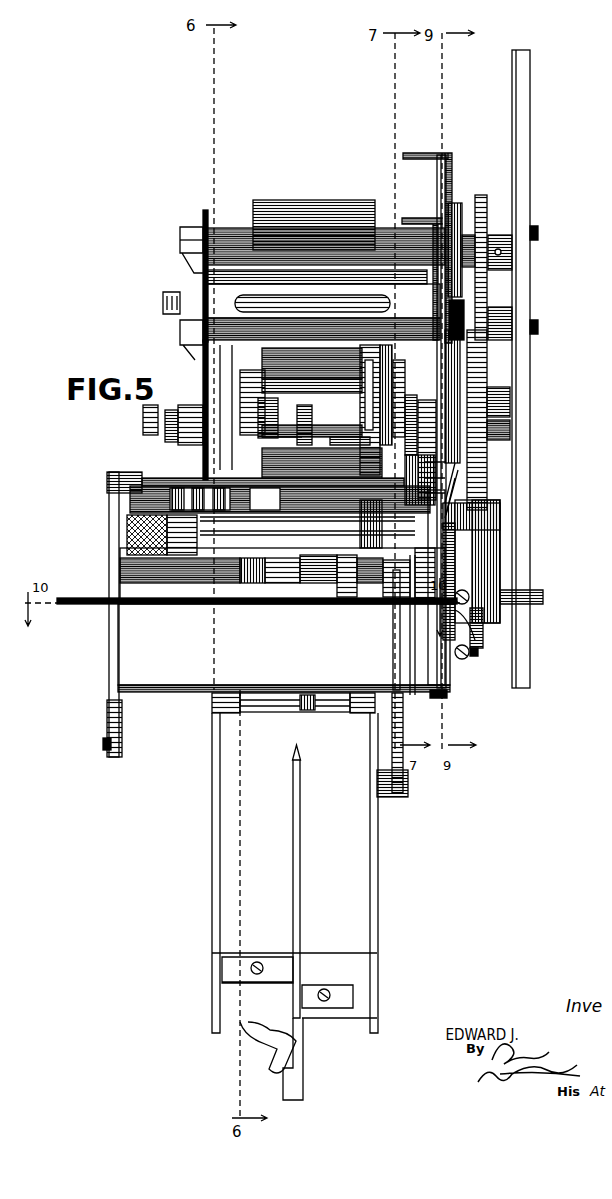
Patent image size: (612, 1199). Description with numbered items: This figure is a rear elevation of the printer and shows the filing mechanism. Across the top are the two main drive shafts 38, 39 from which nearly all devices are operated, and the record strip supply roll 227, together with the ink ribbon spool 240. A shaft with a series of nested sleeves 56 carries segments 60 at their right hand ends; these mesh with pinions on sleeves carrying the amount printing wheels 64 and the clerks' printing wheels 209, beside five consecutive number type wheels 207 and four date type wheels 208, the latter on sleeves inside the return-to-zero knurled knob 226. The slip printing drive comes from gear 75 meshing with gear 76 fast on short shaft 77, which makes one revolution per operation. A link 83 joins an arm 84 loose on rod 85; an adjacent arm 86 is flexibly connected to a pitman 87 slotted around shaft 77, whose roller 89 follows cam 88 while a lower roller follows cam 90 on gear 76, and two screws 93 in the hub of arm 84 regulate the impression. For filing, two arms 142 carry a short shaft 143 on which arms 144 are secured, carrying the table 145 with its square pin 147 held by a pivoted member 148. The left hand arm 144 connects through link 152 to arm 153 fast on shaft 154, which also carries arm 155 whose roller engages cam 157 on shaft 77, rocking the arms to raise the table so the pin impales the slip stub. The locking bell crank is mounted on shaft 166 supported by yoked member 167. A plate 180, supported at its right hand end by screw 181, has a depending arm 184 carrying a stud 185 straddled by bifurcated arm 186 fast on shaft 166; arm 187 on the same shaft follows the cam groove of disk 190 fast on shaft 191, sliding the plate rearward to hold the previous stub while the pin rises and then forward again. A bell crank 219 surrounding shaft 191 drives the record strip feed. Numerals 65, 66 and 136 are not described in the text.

The shaft 38 is at (532, 230).
The shaft 39 is at (532, 326).
The nested sleeves 56 is at (508, 589).
The segments 60 is at (503, 557).
The amount printing wheels 64 is at (330, 582).
The gear 65 is at (262, 410).
The shaft 66 is at (300, 442).
The gear 75 is at (482, 298).
The gear 76 is at (482, 378).
The short shaft 77 is at (411, 397).
The link 83 is at (448, 544).
The arm 84 is at (445, 632).
The rod 85 is at (486, 625).
The arm 86 is at (474, 645).
The pitman 87 is at (480, 358).
The cam 88 is at (482, 430).
The anti-friction roller 89 is at (452, 340).
The cam 90 is at (482, 386).
The screws 93 is at (478, 635).
The collar 136 is at (318, 425).
The downwardly extending arms 142 is at (240, 715).
The short shaft 143 is at (215, 702).
The arms 144 is at (214, 845).
The table 145 is at (362, 973).
The square pin 147 is at (300, 854).
The member 148 is at (262, 1042).
The link 152 is at (402, 757).
The arm 153 is at (398, 635).
The shaft 154 is at (310, 582).
The arm 155 is at (345, 516).
The cam 157 is at (386, 378).
The shaft 166 is at (158, 478).
The yoked member 167 is at (130, 553).
The plate 180 is at (145, 692).
The screw 181 is at (446, 697).
The depending arm 184 is at (120, 725).
The stud 185 is at (104, 745).
The arm 186 is at (108, 578).
The arm 187 is at (370, 443).
The disk 190 is at (428, 482).
The shaft 191 is at (430, 467).
The consecutive number type wheels 207 is at (288, 580).
The date type wheels 208 is at (242, 580).
The clerks' printing wheels 209 is at (368, 585).
The bell crank 219 is at (428, 493).
The return-to-zero knurled knob 226 is at (166, 583).
The supply roll 227 is at (312, 206).
The spool 240 is at (452, 178).